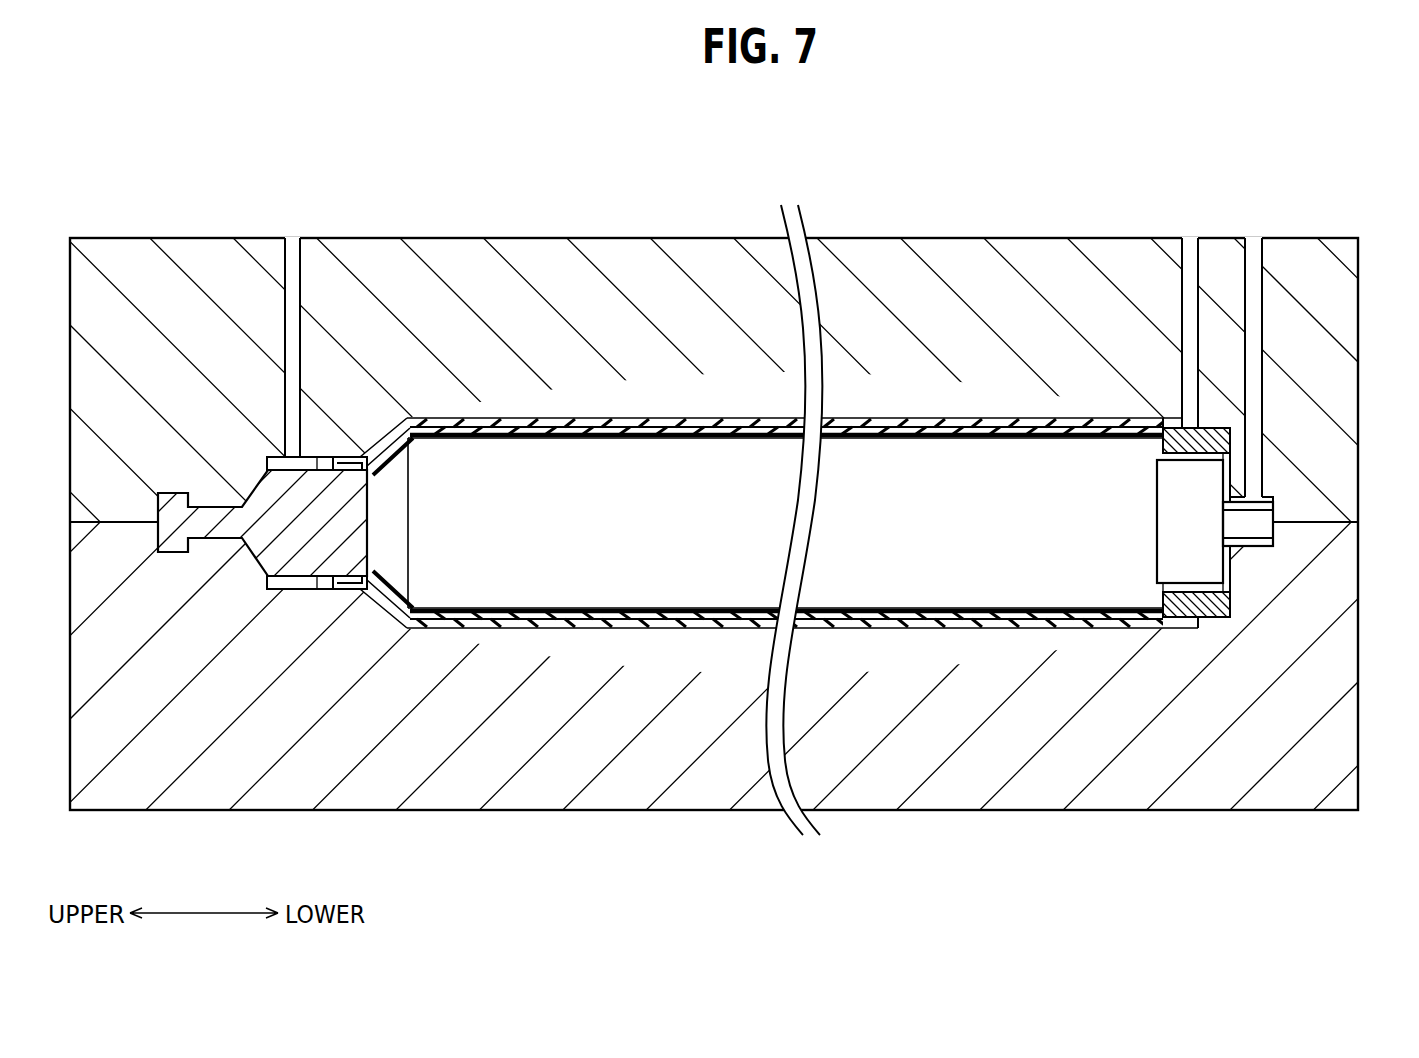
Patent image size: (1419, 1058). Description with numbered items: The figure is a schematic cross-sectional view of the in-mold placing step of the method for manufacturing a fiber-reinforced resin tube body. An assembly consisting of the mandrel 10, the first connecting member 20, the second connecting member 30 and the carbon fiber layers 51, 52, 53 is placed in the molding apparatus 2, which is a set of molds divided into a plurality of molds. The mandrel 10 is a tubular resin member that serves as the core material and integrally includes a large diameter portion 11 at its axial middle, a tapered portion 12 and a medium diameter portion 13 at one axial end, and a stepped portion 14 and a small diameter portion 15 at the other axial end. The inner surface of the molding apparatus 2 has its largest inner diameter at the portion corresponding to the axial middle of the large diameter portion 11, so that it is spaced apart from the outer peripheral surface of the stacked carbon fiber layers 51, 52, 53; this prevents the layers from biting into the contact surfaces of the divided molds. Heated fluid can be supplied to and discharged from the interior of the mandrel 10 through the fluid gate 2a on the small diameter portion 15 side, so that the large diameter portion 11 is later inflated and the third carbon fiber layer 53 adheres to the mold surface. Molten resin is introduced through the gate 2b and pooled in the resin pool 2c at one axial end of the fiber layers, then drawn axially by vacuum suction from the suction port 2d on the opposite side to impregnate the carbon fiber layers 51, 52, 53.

The molding apparatus 2 is at (1344, 158).
The fluid gate 2a is at (1255, 258).
The gate 2b is at (290, 260).
The resin pool 2c is at (325, 457).
The suction port 2d is at (1192, 258).
The mandrel 10 is at (1273, 503).
The large diameter portion 11 is at (960, 612).
The tapered portion 12 is at (393, 592).
The medium diameter portion 13 is at (353, 590).
The stepped portion 14 is at (1188, 588).
The small diameter portion 15 is at (1252, 540).
The first connecting member 20 is at (248, 502).
The second connecting member 30 is at (1230, 605).
The first carbon fiber layer 51 is at (893, 415).
The second carbon fiber layer 52 is at (786, 523).
The third carbon fiber layer 53 is at (786, 523).